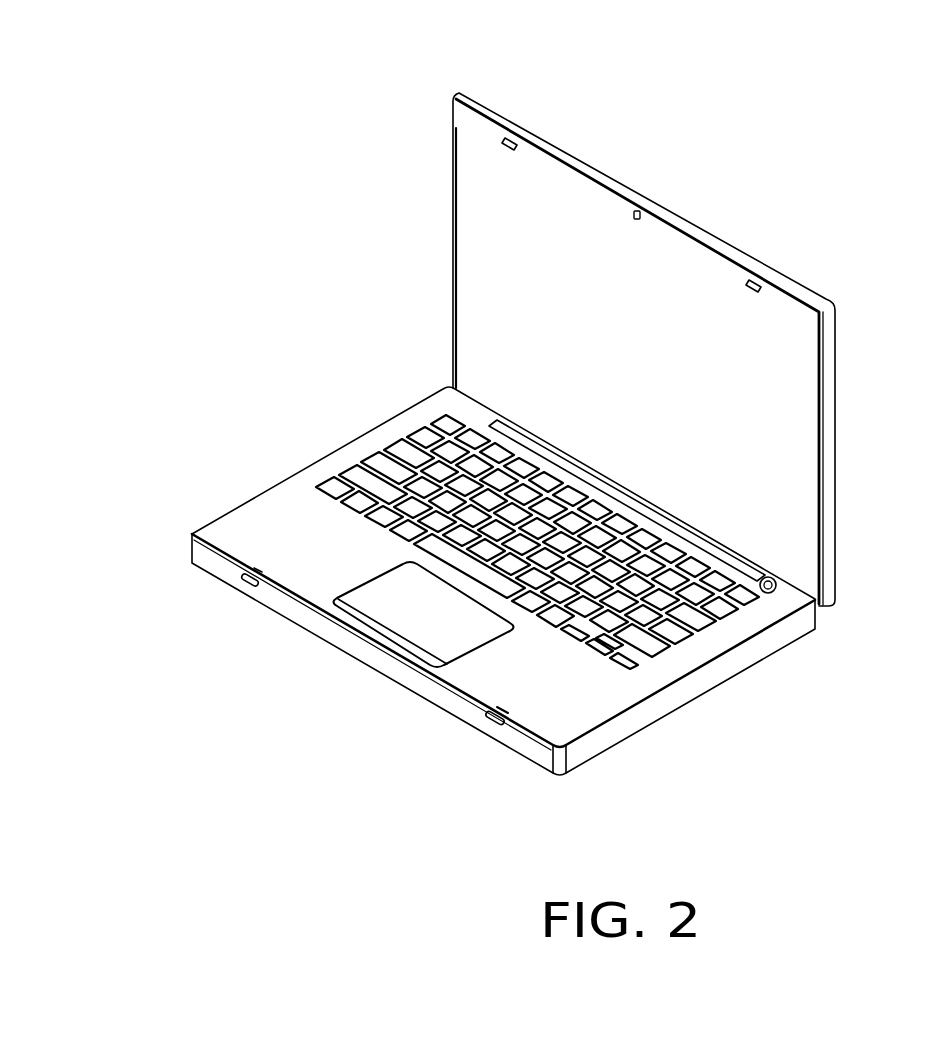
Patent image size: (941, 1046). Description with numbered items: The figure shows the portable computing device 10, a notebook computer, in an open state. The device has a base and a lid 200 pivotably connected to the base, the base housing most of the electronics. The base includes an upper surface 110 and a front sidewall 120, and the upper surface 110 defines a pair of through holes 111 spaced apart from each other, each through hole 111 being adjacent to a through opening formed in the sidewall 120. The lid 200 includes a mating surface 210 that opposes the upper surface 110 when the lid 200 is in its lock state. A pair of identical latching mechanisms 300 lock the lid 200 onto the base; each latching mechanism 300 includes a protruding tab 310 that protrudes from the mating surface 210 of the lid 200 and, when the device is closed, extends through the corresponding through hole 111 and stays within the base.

The portable computing device 10 is at (628, 76).
The upper surface 110 is at (248, 533).
The through hole 111 is at (508, 722).
The front sidewall 120 is at (362, 650).
The lid 200 is at (827, 353).
The mating surface 210 is at (777, 390).
The latching mechanism 300 is at (493, 722).
The protruding tab 310 is at (757, 282).